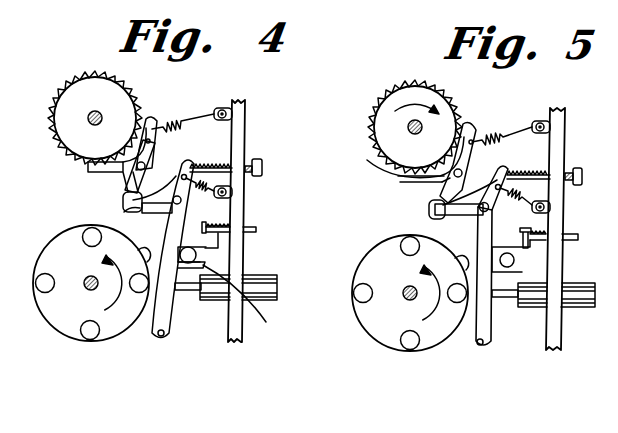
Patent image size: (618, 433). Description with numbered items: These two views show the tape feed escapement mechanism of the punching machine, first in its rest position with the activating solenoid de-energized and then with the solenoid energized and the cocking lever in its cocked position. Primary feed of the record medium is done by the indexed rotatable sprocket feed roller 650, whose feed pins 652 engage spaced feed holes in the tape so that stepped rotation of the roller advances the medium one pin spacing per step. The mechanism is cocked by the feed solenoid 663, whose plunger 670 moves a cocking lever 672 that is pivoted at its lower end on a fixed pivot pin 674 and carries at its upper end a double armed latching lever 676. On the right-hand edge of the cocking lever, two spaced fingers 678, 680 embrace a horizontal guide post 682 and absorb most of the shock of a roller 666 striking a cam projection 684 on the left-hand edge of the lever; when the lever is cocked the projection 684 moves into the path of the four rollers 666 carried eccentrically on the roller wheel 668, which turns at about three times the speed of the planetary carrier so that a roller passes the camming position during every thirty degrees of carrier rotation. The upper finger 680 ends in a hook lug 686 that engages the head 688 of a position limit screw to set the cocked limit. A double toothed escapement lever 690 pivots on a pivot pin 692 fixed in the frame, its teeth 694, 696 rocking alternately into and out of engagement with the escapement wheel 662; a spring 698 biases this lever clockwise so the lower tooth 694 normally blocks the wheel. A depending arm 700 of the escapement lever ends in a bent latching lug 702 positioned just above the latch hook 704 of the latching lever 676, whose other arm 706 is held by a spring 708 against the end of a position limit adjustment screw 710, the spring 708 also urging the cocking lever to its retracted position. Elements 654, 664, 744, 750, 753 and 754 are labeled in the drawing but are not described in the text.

In FIG. 4, the sprocket feed roller 650 is at (55, 99).
In FIG. 5, the sprocket feed roller 650 is at (373, 112).
In FIG. 4, the feed pins 652 is at (95, 72).
In FIG. 5, the feed pins 652 is at (399, 85).
In FIG. 4, the shaft 654 is at (91, 125).
In FIG. 5, the shaft 654 is at (411, 133).
In FIG. 4, the escapement wheel 662 is at (117, 108).
In FIG. 5, the escapement wheel 662 is at (440, 115).
In FIG. 4, the feed solenoid 663 is at (260, 282).
In FIG. 5, the feed solenoid 663 is at (574, 292).
In FIG. 5, the member 664 is at (376, 432).
In FIG. 4, the roller 666 is at (86, 326).
In FIG. 5, the roller 666 is at (410, 346).
In FIG. 4, the roller wheel 668 is at (40, 256).
In FIG. 5, the roller wheel 668 is at (352, 274).
In FIG. 4, the plunger 670 is at (190, 291).
In FIG. 5, the plunger 670 is at (503, 298).
In FIG. 4, the cocking lever 672 is at (170, 324).
In FIG. 5, the cocking lever 672 is at (490, 332).
In FIG. 4, the fixed pivot pin 674 is at (160, 340).
In FIG. 5, the fixed pivot pin 674 is at (481, 346).
In FIG. 4, the double armed latching lever 676 is at (123, 212).
In FIG. 5, the double armed latching lever 676 is at (436, 220).
In FIG. 4, the finger 678 is at (249, 298).
In FIG. 4, the upper finger 680 is at (218, 240).
In FIG. 5, the upper finger 680 is at (511, 256).
In FIG. 4, the horizontal guide post 682 is at (197, 256).
In FIG. 4, the cam projection 684 is at (138, 250).
In FIG. 5, the cam projection 684 is at (455, 258).
In FIG. 4, the hook lug 686 is at (222, 240).
In FIG. 5, the hook lug 686 is at (555, 229).
In FIG. 4, the head of position limit screw 688 is at (204, 224).
In FIG. 5, the head of position limit screw 688 is at (549, 238).
In FIG. 4, the double toothed escapement lever 690 is at (95, 176).
In FIG. 5, the double toothed escapement lever 690 is at (398, 178).
In FIG. 4, the pivot pin 692 is at (145, 164).
In FIG. 5, the pivot pin 692 is at (442, 182).
In FIG. 4, the lower escapement tooth 694 is at (88, 165).
In FIG. 5, the lower escapement tooth 694 is at (367, 160).
In FIG. 4, the escapement tooth 696 is at (152, 126).
In FIG. 5, the escapement tooth 696 is at (474, 138).
In FIG. 4, the spring 698 is at (218, 110).
In FIG. 5, the spring 698 is at (536, 125).
In FIG. 4, the depending arm 700 is at (183, 178).
In FIG. 5, the depending arm 700 is at (503, 165).
In FIG. 4, the bent latching lug 702 is at (123, 196).
In FIG. 4, the latch hook 704 is at (143, 213).
In FIG. 5, the latch hook 704 is at (432, 207).
In FIG. 4, the arm 706 is at (187, 160).
In FIG. 5, the arm 706 is at (505, 168).
In FIG. 4, the spring 708 is at (222, 193).
In FIG. 5, the spring 708 is at (546, 202).
In FIG. 4, the position limit adjustment screw 710 is at (262, 169).
In FIG. 5, the position limit adjustment screw 710 is at (588, 160).
In FIG. 4, the member 744 is at (137, 430).
In FIG. 5, the member 744 is at (440, 432).
In FIG. 4, the member 750 is at (110, 425).
In FIG. 5, the member 750 is at (420, 432).
In FIG. 4, the member 753 is at (175, 430).
In FIG. 4, the member 754 is at (205, 430).